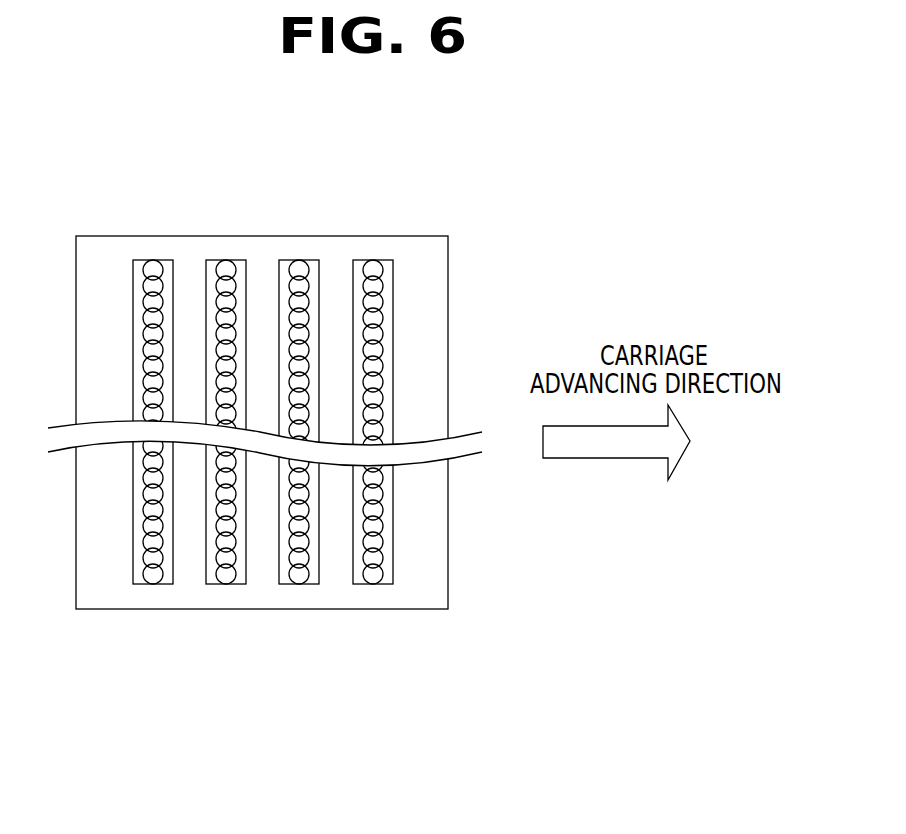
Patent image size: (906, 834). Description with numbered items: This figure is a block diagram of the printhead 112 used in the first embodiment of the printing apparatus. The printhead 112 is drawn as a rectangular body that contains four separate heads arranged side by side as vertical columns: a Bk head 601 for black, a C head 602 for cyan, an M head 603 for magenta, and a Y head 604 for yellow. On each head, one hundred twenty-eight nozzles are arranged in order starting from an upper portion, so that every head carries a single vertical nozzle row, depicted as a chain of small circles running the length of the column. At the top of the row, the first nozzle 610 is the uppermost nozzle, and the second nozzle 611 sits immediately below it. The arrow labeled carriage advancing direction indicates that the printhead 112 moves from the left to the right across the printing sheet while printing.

The printhead 112 is at (269, 236).
The Bk head 601 is at (440, 464).
The C head 602 is at (302, 586).
The M head 603 is at (227, 586).
The Y head 604 is at (152, 586).
The first nozzle 610 is at (376, 268).
The second nozzle 611 is at (380, 283).